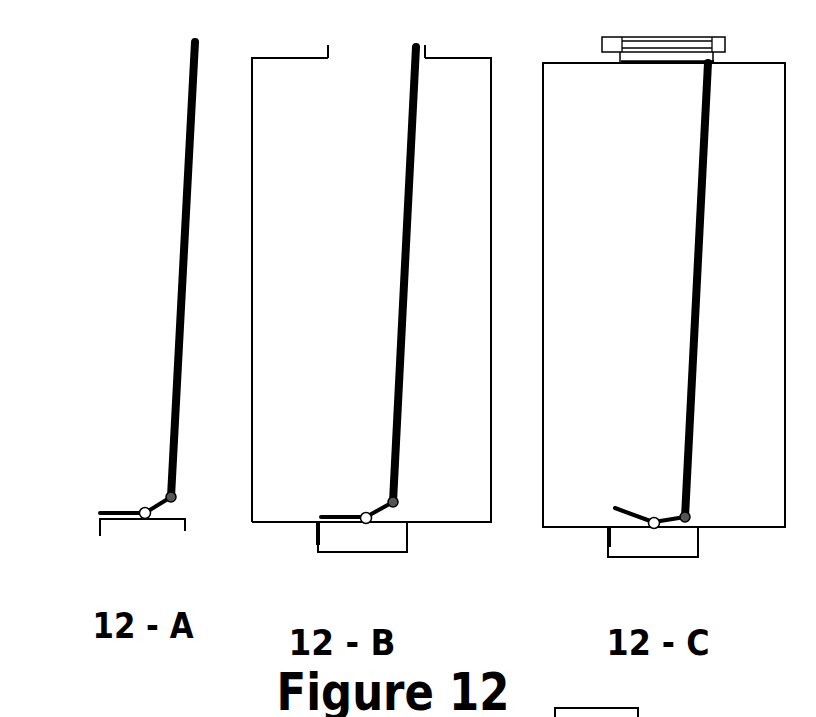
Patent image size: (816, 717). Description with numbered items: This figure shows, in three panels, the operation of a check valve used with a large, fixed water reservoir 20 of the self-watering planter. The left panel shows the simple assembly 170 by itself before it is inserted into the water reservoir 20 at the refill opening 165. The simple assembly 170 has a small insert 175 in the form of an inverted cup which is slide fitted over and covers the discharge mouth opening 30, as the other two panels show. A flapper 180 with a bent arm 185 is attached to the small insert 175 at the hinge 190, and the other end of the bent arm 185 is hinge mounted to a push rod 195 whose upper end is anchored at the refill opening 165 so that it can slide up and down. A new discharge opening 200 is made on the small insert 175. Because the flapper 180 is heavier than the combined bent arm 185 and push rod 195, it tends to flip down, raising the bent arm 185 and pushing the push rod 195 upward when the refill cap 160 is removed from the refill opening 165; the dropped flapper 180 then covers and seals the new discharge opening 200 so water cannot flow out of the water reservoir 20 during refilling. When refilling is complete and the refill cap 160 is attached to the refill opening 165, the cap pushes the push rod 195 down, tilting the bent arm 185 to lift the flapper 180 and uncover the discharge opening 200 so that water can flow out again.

The water reservoir 20 is at (250, 462).
The discharge mouth opening 30 is at (408, 545).
The refill cap 160 is at (602, 43).
The refill opening 165 is at (368, 57).
The simple assembly 170 is at (131, 273).
The small insert 175 is at (185, 530).
The flapper 180 is at (110, 508).
The bent arm 185 is at (157, 500).
The hinge 190 is at (143, 508).
The push rod 195 is at (188, 178).
The new discharge opening 200 is at (117, 520).